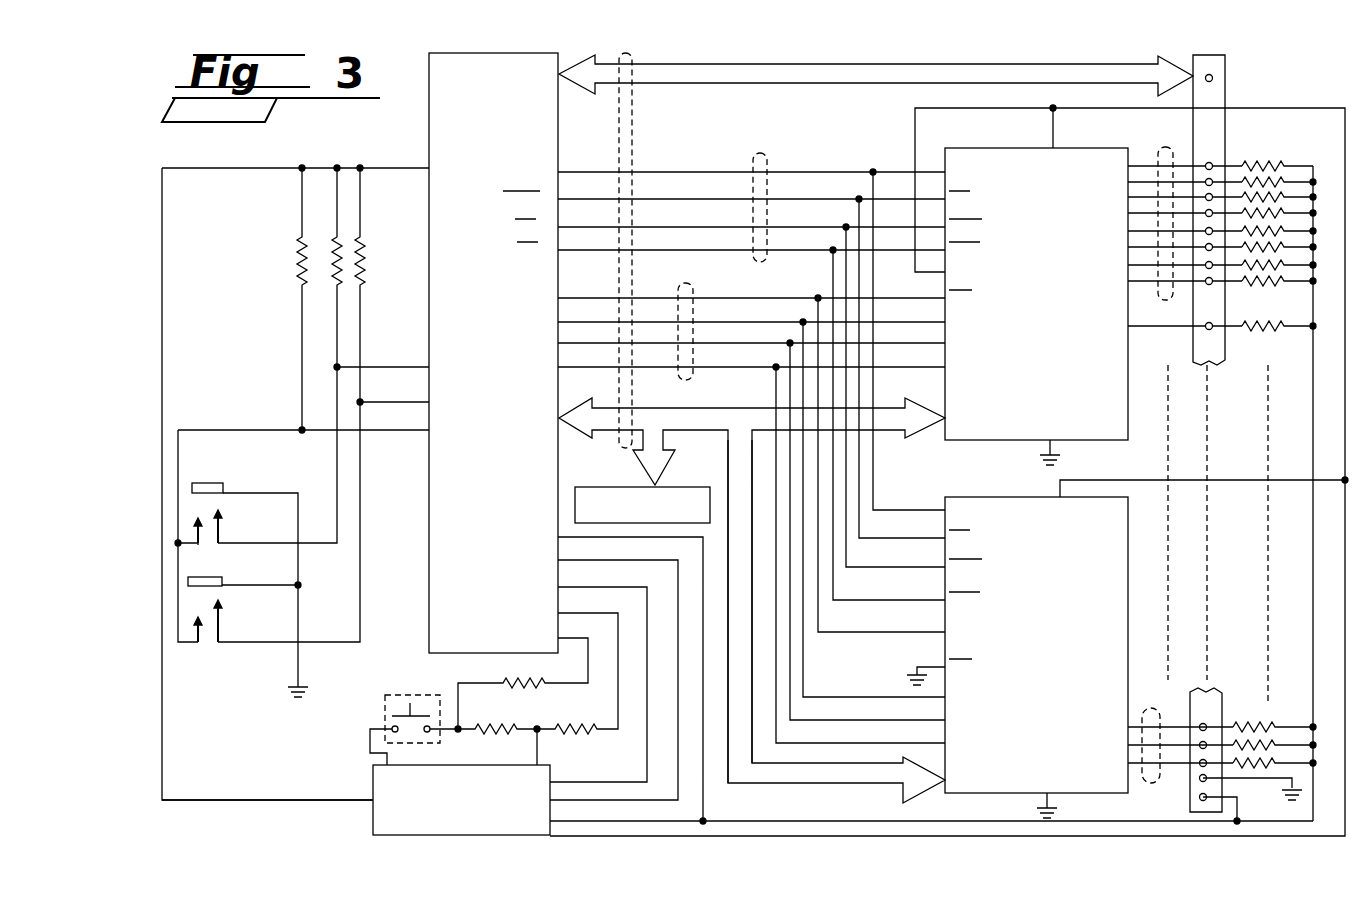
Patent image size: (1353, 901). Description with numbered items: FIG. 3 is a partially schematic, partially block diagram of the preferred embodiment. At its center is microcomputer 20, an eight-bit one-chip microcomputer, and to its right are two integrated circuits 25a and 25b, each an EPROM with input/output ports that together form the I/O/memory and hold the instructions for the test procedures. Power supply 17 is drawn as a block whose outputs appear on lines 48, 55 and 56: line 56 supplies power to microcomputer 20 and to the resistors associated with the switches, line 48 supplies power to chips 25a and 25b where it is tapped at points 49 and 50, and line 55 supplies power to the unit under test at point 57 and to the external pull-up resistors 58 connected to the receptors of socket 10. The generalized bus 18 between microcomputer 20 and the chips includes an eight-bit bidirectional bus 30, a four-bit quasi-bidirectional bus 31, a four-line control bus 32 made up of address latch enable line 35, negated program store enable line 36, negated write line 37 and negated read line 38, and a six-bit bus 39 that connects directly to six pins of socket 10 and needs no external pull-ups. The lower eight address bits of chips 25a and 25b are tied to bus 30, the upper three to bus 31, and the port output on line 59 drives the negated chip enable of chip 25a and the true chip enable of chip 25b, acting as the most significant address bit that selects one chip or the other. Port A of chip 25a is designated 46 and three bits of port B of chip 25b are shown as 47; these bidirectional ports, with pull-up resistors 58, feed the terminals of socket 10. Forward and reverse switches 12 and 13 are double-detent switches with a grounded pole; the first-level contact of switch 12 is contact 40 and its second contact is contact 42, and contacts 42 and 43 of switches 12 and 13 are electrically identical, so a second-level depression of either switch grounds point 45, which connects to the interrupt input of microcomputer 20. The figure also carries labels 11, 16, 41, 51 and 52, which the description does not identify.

The socket 10 is at (1225, 85).
The power switch 11 is at (402, 695).
The forward switch 12 is at (222, 577).
The reverse switch 13 is at (213, 483).
The display 16 is at (596, 487).
The power supply 17 is at (373, 778).
The generalized bus 18 is at (632, 122).
The microcomputer 20 is at (429, 122).
The I/O/memory integrated circuit 25a is at (975, 148).
The I/O/memory integrated circuit 25b is at (987, 497).
The eight bit bidirectional bus 30 is at (723, 408).
The four bit quasi bidirectional bus 31 is at (683, 283).
The control line bus 32 is at (762, 153).
The address latch enable line 35 is at (705, 168).
The negated program store enable line 36 is at (708, 185).
The negated write line 37 is at (708, 228).
The negated read line 38 is at (708, 238).
The six bit bus 39 is at (818, 83).
The first level contact 40 is at (255, 648).
The light beam 41 is at (228, 543).
The second contact 42 is at (197, 649).
The contact 43 is at (210, 546).
The point 45 is at (302, 430).
The port A 46 is at (1170, 147).
The port B bits 47 is at (1162, 783).
The power line 48 is at (868, 836).
The tap point 49 is at (1343, 478).
The tap point 50 is at (1050, 112).
The junction 51 is at (703, 821).
The address bus 52 is at (727, 582).
The power line 55 is at (805, 821).
The power line 56 is at (252, 800).
The point 57 is at (1237, 821).
The pull up resistors 58 is at (1268, 165).
The chip select line 59 is at (790, 298).